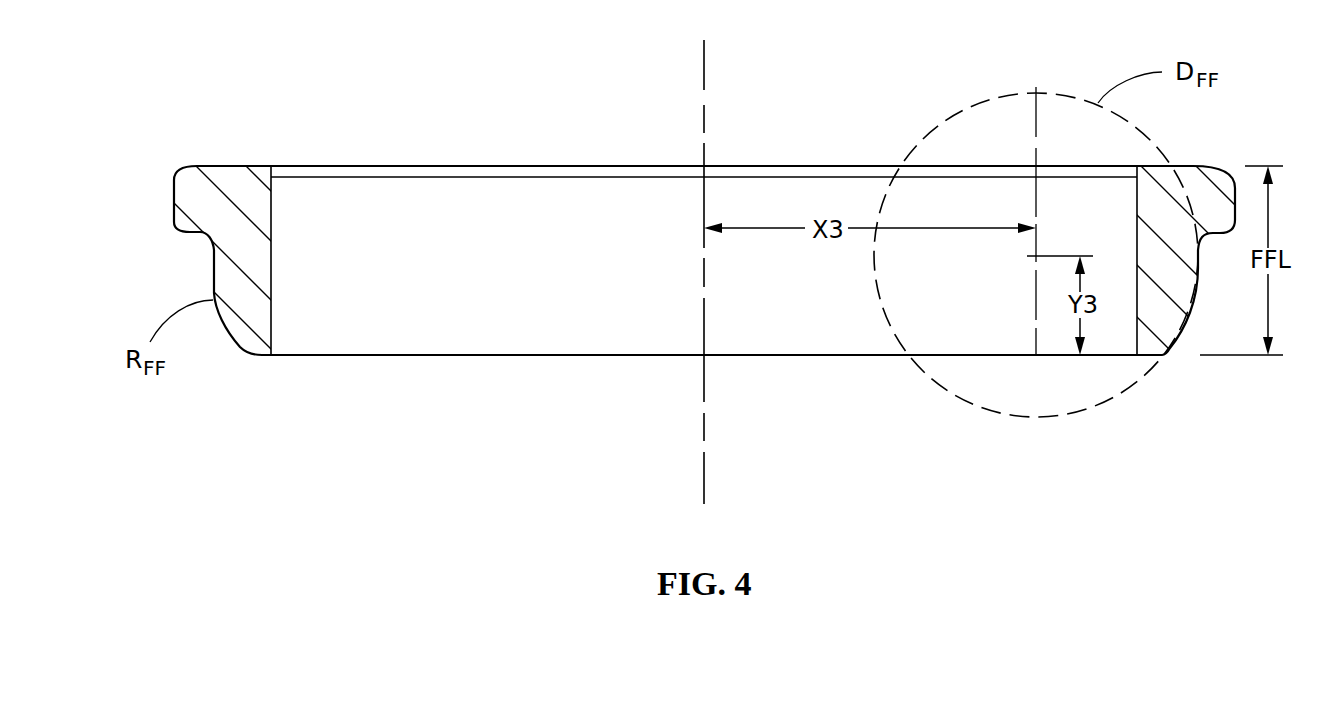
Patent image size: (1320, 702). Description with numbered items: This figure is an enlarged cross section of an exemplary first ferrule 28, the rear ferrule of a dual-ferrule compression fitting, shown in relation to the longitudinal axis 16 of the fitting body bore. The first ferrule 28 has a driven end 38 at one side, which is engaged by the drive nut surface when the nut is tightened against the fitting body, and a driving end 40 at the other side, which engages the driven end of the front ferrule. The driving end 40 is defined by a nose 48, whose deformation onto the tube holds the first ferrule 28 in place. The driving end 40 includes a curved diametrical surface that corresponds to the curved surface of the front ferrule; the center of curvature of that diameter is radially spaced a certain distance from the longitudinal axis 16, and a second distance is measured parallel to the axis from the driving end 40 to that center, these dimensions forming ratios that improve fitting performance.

The longitudinal axis 16 is at (705, 88).
The first ferrule 28 is at (172, 198).
The driven end 38 is at (223, 165).
The driving end 40 is at (259, 356).
The nose 48 is at (232, 342).